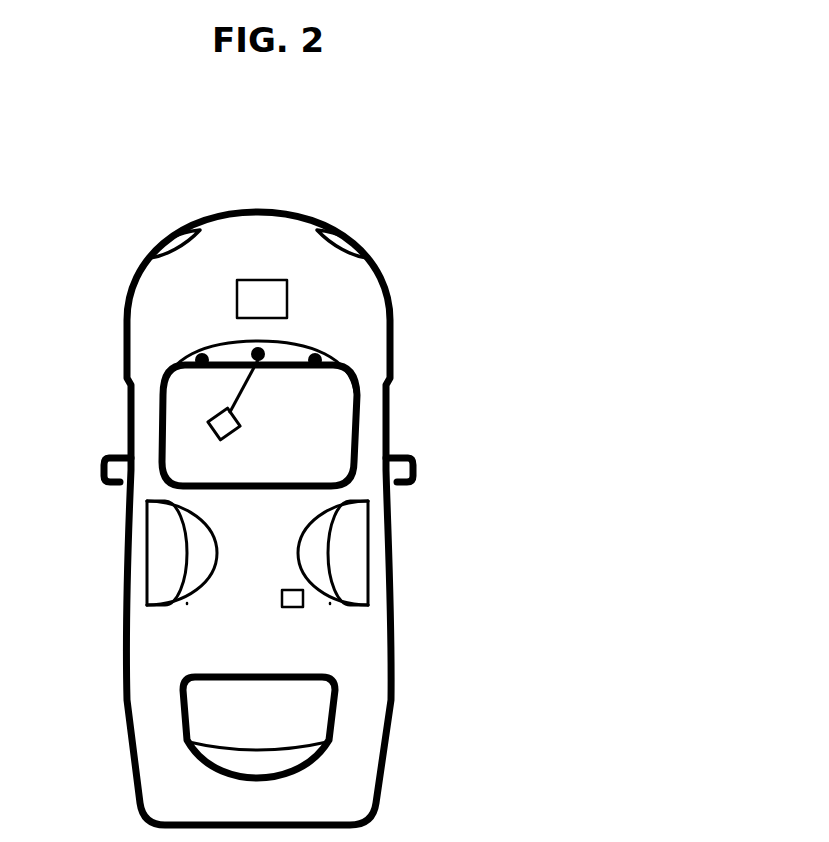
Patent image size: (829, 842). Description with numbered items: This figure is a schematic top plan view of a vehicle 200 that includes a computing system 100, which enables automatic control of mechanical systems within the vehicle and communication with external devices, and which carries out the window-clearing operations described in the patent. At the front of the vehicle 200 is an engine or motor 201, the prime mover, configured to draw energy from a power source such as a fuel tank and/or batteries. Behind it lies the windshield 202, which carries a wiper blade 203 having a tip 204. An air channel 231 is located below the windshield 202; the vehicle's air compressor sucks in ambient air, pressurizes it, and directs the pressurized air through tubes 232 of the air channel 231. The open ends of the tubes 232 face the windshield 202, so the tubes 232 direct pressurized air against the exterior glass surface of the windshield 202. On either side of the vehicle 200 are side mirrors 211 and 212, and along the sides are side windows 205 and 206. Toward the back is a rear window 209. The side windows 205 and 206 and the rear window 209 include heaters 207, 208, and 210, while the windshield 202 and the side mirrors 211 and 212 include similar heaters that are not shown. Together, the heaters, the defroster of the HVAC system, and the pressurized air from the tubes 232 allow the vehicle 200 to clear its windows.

The computing system 100 is at (295, 596).
The vehicle 200 is at (614, 152).
The engine or motor 201 is at (263, 280).
The windshield 202 is at (357, 396).
The wiper blade 203 is at (243, 388).
The tip 204 is at (234, 434).
The side window 205 is at (187, 603).
The side window 206 is at (330, 603).
The heater 207 is at (187, 568).
The heater 208 is at (330, 568).
The rear window 209 is at (275, 773).
The heater 210 is at (237, 748).
The side mirror 211 is at (118, 462).
The side mirror 212 is at (399, 462).
The air channel 231 is at (200, 355).
The tubes 232 is at (214, 345).